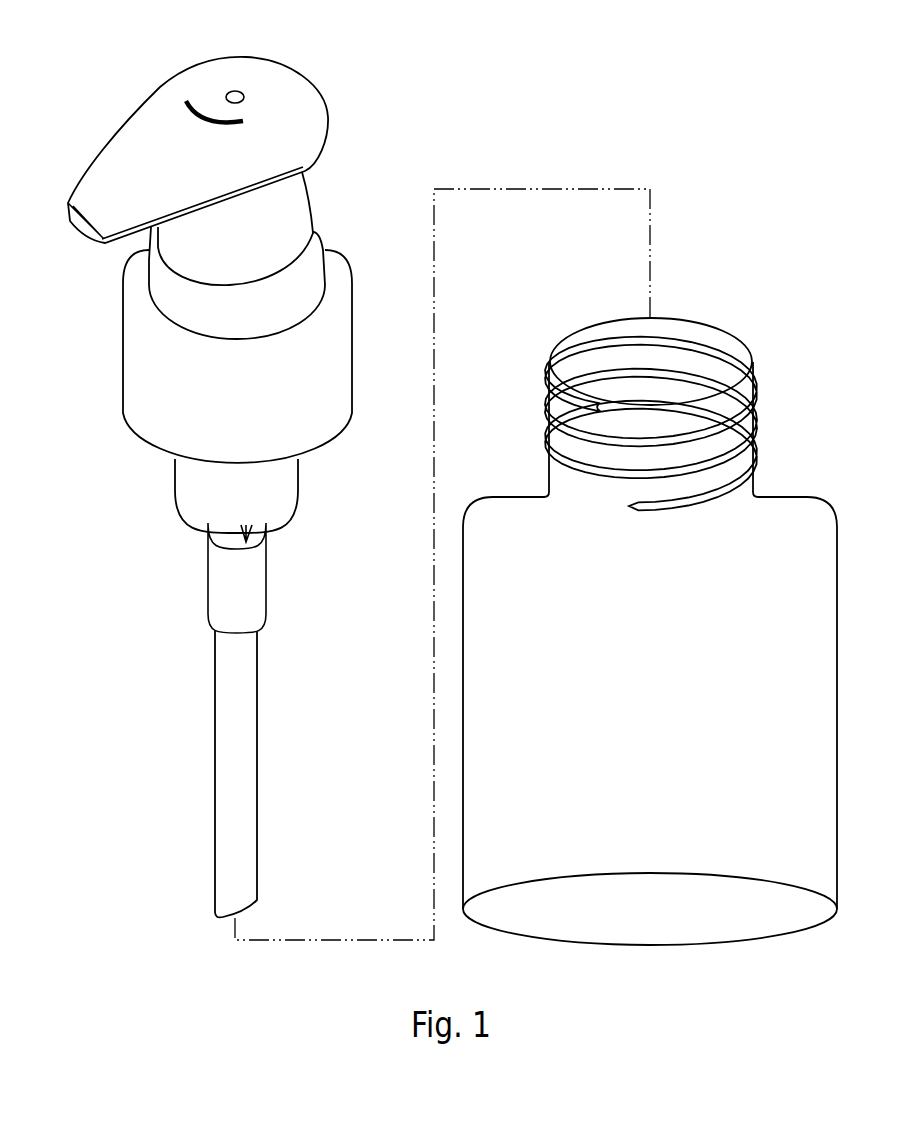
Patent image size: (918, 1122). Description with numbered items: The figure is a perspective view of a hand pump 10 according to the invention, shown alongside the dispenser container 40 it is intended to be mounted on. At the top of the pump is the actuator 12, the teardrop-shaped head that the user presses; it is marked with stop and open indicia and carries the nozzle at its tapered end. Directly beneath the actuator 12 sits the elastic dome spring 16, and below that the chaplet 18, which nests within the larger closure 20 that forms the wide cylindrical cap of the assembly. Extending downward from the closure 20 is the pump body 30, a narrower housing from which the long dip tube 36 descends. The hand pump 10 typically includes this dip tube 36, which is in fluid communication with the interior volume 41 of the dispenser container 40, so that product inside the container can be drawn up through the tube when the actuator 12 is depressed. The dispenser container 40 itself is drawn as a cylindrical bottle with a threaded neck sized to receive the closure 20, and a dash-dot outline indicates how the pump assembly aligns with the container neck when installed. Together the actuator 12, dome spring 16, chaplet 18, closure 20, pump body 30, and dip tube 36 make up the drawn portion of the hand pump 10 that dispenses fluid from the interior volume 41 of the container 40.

The hand pump 10 is at (112, 42).
The actuator 12 is at (273, 62).
The elastic dome spring 16 is at (310, 195).
The chaplet 18 is at (327, 247).
The closure 20 is at (352, 344).
The pump body 30 is at (175, 480).
The dip tube 36 is at (258, 762).
The dispenser container 40 is at (777, 497).
The interior volume 41 is at (743, 565).